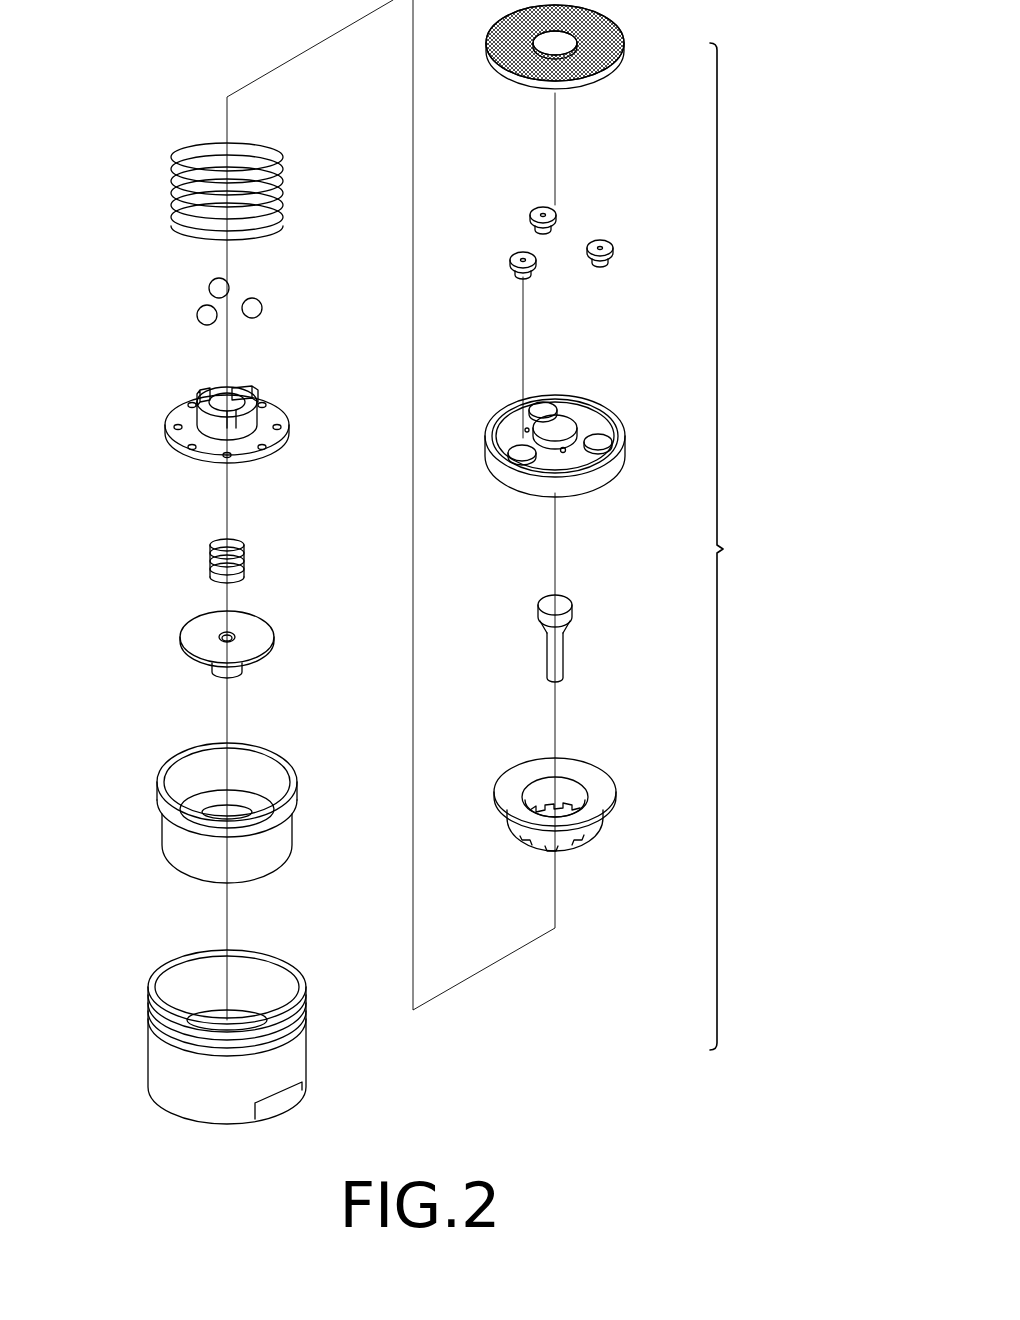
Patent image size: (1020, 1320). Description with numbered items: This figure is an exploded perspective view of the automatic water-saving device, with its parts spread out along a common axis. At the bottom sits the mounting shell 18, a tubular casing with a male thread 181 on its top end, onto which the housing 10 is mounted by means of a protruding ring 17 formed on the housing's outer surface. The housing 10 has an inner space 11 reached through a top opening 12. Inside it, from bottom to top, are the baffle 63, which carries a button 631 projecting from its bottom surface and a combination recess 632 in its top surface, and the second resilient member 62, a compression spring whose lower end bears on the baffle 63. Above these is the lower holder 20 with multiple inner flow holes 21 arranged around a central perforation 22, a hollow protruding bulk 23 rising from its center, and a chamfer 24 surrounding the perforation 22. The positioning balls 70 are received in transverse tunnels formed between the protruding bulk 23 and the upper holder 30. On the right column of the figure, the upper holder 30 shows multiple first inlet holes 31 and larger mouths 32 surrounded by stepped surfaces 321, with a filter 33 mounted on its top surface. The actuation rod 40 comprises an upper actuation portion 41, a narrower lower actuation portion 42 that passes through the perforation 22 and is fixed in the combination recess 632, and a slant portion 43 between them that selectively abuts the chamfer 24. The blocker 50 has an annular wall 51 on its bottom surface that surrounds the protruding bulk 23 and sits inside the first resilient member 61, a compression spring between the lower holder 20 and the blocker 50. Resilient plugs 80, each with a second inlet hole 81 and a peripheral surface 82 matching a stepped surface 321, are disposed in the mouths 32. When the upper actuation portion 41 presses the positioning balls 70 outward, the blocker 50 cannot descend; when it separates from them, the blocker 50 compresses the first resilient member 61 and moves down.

The housing 10 is at (224, 801).
The inner space 11 is at (268, 760).
The top opening 12 is at (195, 758).
The protruding ring 17 is at (283, 852).
The mounting shell 18 is at (273, 1037).
The male thread 181 is at (305, 995).
The lower holder 20 is at (224, 422).
The inner flow holes 21 is at (281, 425).
The perforation 22 is at (232, 390).
The protruding bulk 23 is at (224, 428).
The chamfer 24 is at (203, 392).
The upper holder 30 is at (594, 450).
The first inlet holes 31 is at (565, 452).
The mouths 32 is at (605, 440).
The stepped surfaces 321 is at (548, 410).
The filter 33 is at (612, 50).
The actuation rod 40 is at (537, 642).
The upper actuation portion 41 is at (573, 613).
The lower actuation portion 42 is at (563, 668).
The slant portion 43 is at (565, 626).
The blocker 50 is at (581, 806).
The annular wall 51 is at (590, 838).
The first resilient member 61 is at (176, 203).
The second resilient member 62 is at (212, 557).
The baffle 63 is at (223, 641).
The button 631 is at (237, 668).
The combination recess 632 is at (232, 632).
The positioning balls 70 is at (258, 303).
The plugs 80 is at (628, 257).
The second inlet hole 81 is at (602, 249).
The peripheral surface 82 is at (557, 224).